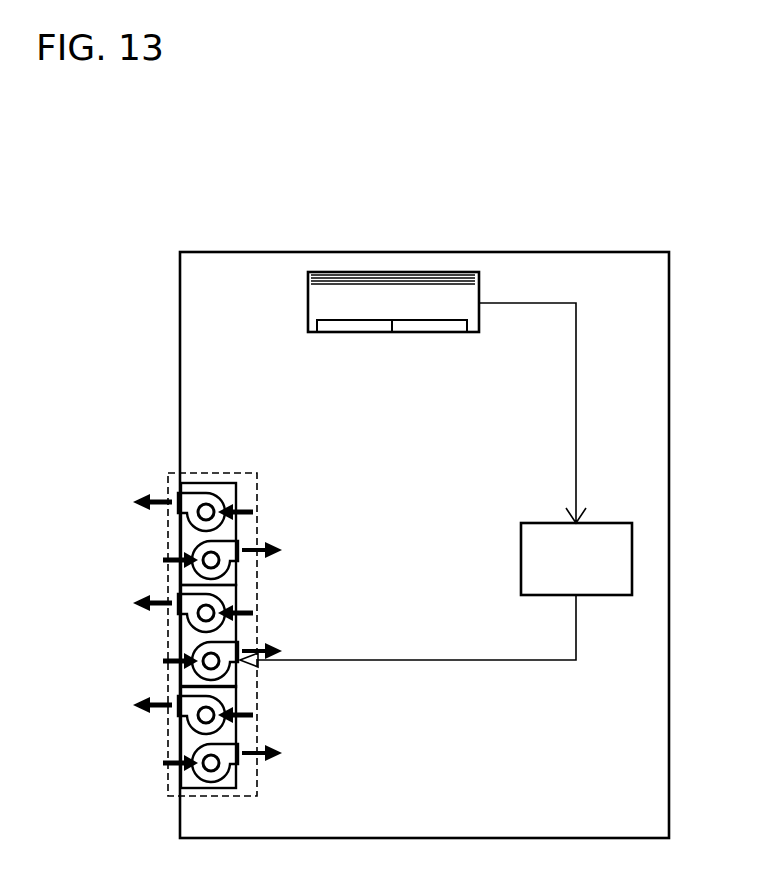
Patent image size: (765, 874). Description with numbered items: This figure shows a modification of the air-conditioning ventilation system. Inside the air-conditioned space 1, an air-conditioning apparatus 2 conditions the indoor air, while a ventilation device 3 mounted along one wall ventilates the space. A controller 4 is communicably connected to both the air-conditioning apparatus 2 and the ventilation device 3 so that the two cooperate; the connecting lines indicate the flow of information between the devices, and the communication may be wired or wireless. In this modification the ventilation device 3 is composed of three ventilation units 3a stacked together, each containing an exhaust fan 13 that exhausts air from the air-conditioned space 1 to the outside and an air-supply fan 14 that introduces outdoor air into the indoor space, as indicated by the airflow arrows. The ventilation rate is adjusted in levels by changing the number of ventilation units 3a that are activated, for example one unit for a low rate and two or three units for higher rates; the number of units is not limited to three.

The air-conditioned space 1 is at (669, 305).
The air-conditioning apparatus 2 is at (479, 322).
The ventilation device 3 is at (233, 472).
The ventilation unit 3a is at (190, 539).
The controller 4 is at (521, 556).
The exhaust fan 13 is at (192, 502).
The air-supply fan 14 is at (218, 576).